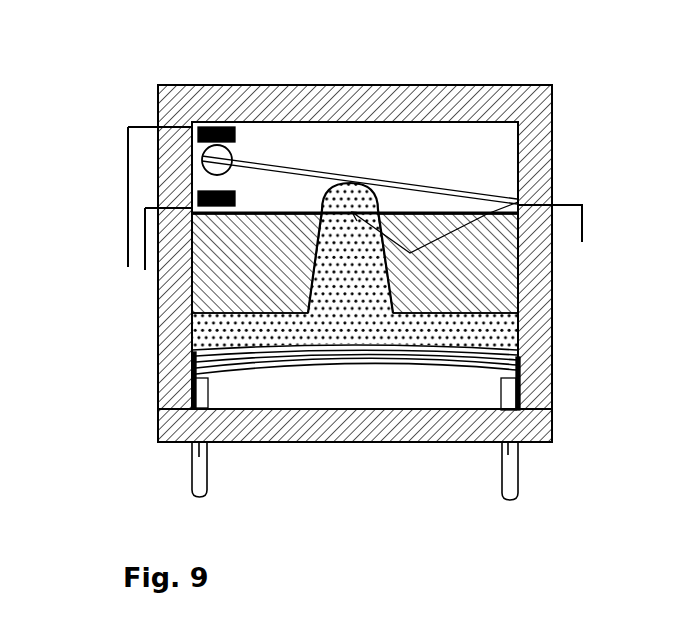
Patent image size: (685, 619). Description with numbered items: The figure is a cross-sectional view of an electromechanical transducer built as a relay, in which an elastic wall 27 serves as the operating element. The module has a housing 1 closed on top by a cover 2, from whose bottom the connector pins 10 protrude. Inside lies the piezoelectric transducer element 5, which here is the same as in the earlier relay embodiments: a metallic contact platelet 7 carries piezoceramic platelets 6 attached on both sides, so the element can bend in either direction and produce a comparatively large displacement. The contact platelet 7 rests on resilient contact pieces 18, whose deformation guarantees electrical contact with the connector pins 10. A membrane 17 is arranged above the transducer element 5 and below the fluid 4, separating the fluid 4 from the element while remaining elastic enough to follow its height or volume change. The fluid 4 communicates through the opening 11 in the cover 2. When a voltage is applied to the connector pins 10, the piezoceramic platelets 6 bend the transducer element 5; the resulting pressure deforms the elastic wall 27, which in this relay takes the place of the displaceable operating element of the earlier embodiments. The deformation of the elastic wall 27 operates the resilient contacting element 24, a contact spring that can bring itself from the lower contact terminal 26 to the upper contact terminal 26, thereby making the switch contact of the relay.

The housing 1 is at (192, 360).
The cover 2 is at (225, 295).
The fluid 4 is at (465, 328).
The piezoelectric transducer element 5 is at (519, 350).
The piezoceramic platelets 6 is at (498, 372).
The contact platelet 7 is at (158, 423).
The connector pins 10 is at (508, 480).
The opening 11 is at (542, 183).
The membrane 17 is at (477, 350).
The contact pieces 18 is at (550, 442).
The resilient contacting element 24 is at (277, 167).
The contact terminals 26 is at (203, 189).
The elastic wall 27 is at (385, 183).